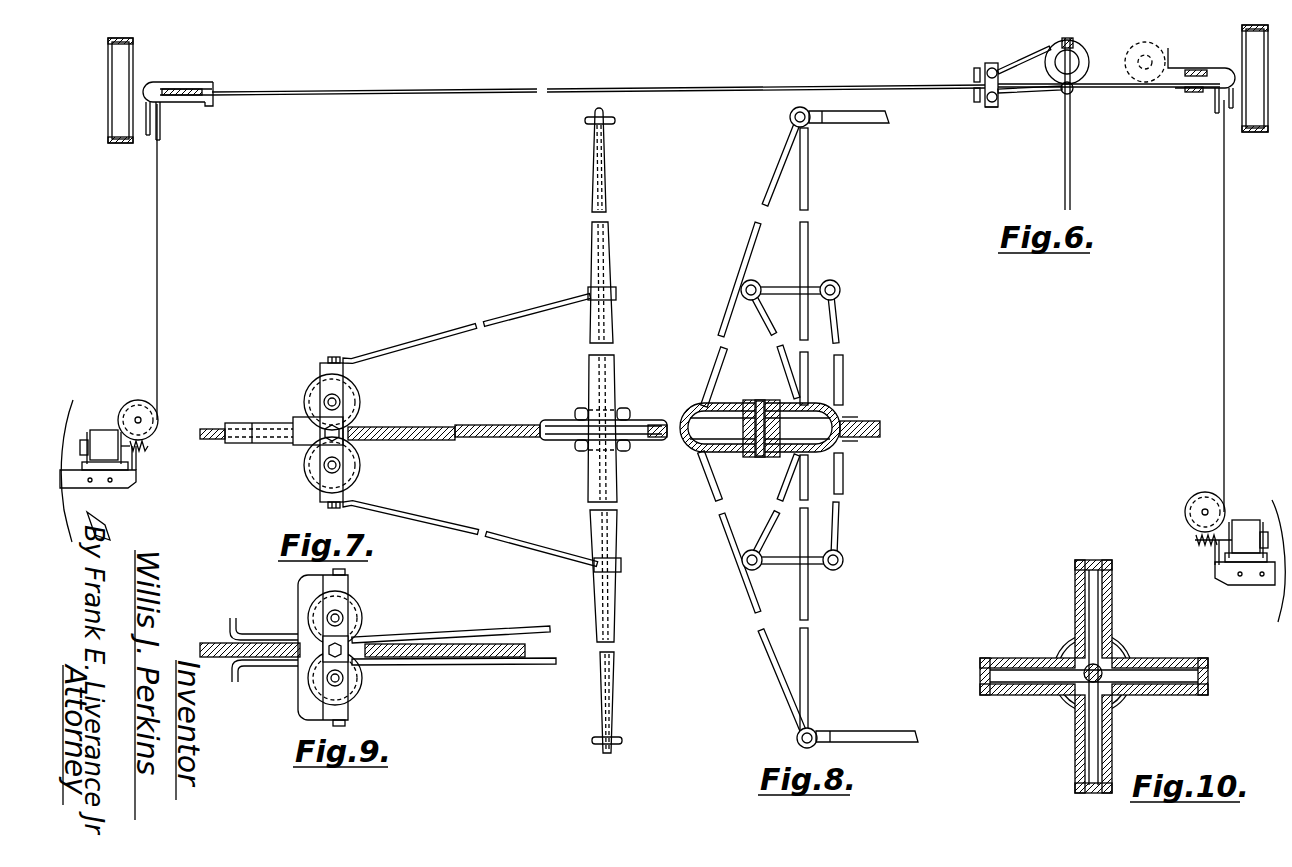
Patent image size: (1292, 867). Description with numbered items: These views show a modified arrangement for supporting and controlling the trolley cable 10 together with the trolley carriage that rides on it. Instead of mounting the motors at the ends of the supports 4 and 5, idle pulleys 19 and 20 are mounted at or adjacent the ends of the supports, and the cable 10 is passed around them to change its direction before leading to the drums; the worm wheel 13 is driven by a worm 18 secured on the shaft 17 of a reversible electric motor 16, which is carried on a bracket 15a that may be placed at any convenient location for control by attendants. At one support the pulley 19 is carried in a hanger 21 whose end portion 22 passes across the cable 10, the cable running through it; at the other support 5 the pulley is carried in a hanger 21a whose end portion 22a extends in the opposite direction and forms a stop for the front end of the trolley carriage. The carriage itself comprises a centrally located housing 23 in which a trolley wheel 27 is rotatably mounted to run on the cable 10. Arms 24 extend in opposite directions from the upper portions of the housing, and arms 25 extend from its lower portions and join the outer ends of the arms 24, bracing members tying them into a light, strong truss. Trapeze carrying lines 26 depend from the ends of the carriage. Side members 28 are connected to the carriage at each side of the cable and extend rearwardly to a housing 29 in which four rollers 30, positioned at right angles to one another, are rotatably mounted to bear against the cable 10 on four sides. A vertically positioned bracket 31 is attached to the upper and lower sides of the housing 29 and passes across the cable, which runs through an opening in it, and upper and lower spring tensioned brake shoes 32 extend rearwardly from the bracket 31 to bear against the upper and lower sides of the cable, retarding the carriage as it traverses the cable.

In FIG. 6, the support 4 is at (131, 72).
In FIG. 6, the support 5 is at (1242, 40).
In FIG. 6, the cable 10 is at (511, 90).
In FIG. 7, the cable 10 is at (497, 440).
In FIG. 8, the cable 10 is at (862, 428).
In FIG. 9, the cable 10 is at (362, 650).
In FIG. 10, the cable 10 is at (1085, 668).
In FIG. 6, the worm wheel 13 is at (158, 418).
In FIG. 6, the bracket 15a is at (106, 488).
In FIG. 6, the electric motor 16 is at (103, 430).
In FIG. 6, the shaft 17 is at (134, 470).
In FIG. 6, the worm 18 is at (143, 450).
In FIG. 6, the idle pulley 19 is at (194, 98).
In FIG. 6, the idle pulley 20 is at (160, 136).
In FIG. 6, the hanger 21 is at (170, 83).
In FIG. 6, the hanger 21a is at (1185, 68).
In FIG. 6, the end portion 22 is at (214, 84).
In FIG. 6, the end portion 22a is at (1166, 46).
In FIG. 7, the housing 23 is at (579, 450).
In FIG. 8, the housing 23 is at (726, 474).
In FIG. 6, the arm 24 is at (1050, 52).
In FIG. 7, the arm 24 is at (612, 314).
In FIG. 8, the arm 24 is at (752, 252).
In FIG. 8, the arm 25 is at (806, 252).
In FIG. 6, the trapeze carrying line 26 is at (1071, 146).
In FIG. 7, the trapeze carrying line 26 is at (616, 120).
In FIG. 8, the trapeze carrying line 26 is at (853, 118).
In FIG. 6, the trolley wheel 27 is at (1080, 70).
In FIG. 7, the trolley wheel 27 is at (571, 429).
In FIG. 8, the trolley wheel 27 is at (752, 440).
In FIG. 6, the side member 28 is at (1027, 94).
In FIG. 7, the side member 28 is at (441, 347).
In FIG. 8, the side member 28 is at (844, 367).
In FIG. 9, the side member 28 is at (462, 664).
In FIG. 10, the side member 28 is at (1091, 560).
In FIG. 6, the housing 29 is at (993, 108).
In FIG. 7, the housing 29 is at (344, 368).
In FIG. 9, the housing 29 is at (346, 585).
In FIG. 10, the housing 29 is at (1130, 696).
In FIG. 6, the roller 30 is at (999, 72).
In FIG. 7, the roller 30 is at (356, 423).
In FIG. 8, the roller 30 is at (856, 418).
In FIG. 9, the roller 30 is at (356, 617).
In FIG. 10, the roller 30 is at (1160, 672).
In FIG. 6, the bracket 31 is at (985, 72).
In FIG. 7, the bracket 31 is at (303, 448).
In FIG. 9, the bracket 31 is at (298, 588).
In FIG. 6, the brake shoe 32 is at (975, 78).
In FIG. 7, the brake shoe 32 is at (265, 453).
In FIG. 9, the brake shoe 32 is at (260, 633).